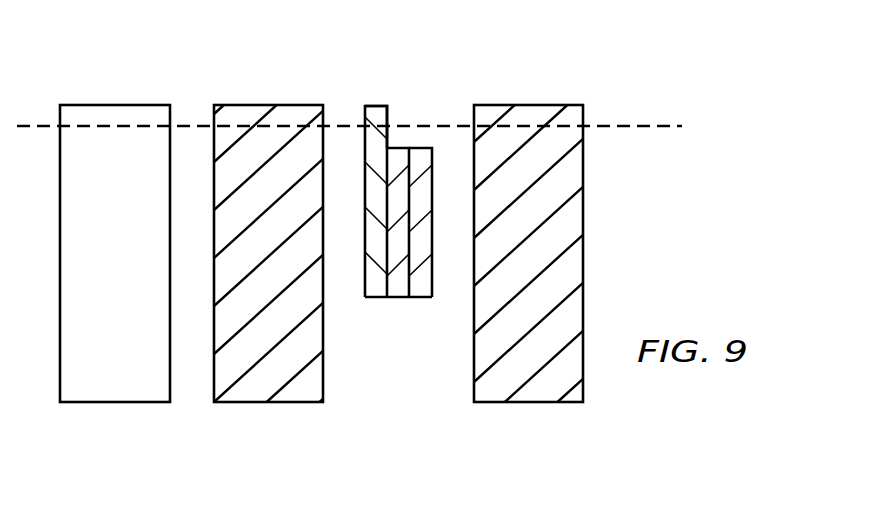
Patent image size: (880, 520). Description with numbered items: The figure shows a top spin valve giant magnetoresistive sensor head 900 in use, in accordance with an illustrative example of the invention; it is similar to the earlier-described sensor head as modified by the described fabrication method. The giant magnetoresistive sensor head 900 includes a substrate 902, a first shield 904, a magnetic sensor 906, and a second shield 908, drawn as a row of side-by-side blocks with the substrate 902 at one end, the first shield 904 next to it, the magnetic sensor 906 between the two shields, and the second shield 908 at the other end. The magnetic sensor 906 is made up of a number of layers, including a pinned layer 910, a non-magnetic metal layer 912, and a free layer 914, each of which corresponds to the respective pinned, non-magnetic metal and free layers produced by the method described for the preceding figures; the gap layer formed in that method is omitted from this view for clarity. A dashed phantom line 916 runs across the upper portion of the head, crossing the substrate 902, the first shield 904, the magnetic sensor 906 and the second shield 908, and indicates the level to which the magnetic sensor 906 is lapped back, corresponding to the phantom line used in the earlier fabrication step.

The giant magnetoresistive sensor head 900 is at (735, 102).
The substrate 902 is at (115, 402).
The first shield 904 is at (250, 402).
The magnetic sensor 906 is at (399, 231).
The second shield 908 is at (550, 402).
The pinned layer 910 is at (423, 297).
The non-magnetic metal layer 912 is at (390, 147).
The free layer 914 is at (377, 297).
The phantom line 916 is at (632, 128).